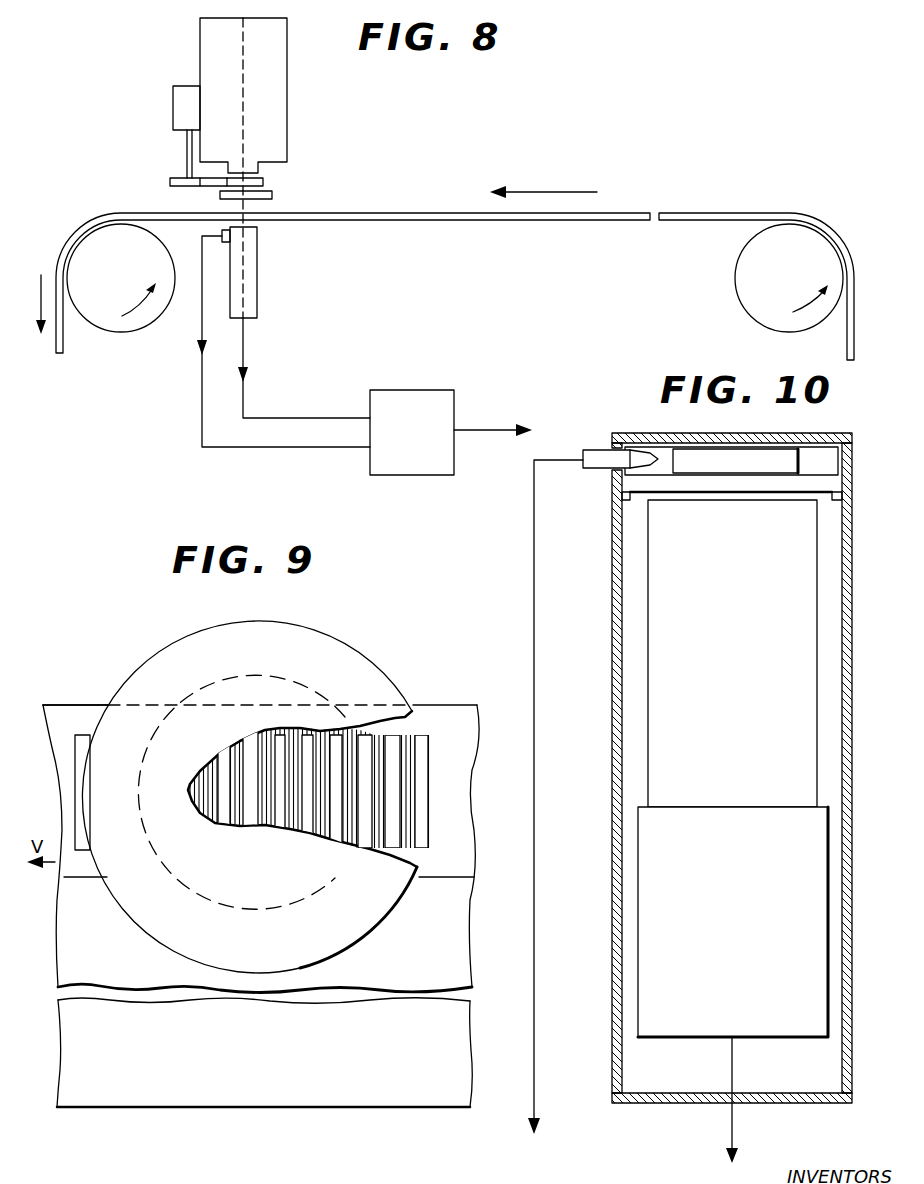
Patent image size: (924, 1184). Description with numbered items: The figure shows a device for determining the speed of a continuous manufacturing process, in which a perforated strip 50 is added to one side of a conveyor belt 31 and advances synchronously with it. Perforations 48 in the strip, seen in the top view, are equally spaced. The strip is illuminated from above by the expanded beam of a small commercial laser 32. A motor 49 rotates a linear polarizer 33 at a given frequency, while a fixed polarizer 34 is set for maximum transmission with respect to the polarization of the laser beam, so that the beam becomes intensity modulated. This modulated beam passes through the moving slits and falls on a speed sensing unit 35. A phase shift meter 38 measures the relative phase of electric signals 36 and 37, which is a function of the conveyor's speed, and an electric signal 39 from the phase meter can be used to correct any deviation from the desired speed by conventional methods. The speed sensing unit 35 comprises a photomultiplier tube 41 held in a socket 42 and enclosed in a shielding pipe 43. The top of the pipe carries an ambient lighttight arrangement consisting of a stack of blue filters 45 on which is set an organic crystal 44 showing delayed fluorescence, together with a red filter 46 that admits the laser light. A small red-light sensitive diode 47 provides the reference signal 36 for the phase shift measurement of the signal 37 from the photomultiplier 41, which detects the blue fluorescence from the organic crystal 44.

In FIG. 8, the conveyor belt 31 is at (560, 221).
In FIG. 9, the conveyor belt 31 is at (478, 912).
In FIG. 8, the laser 32 is at (270, 83).
In FIG. 9, the laser 32 is at (380, 658).
In FIG. 8, the linear polarizer 33 is at (264, 182).
In FIG. 8, the fixed polarizer 34 is at (273, 195).
In FIG. 8, the speed sensing unit 35 is at (257, 272).
In FIG. 9, the speed sensing unit 35 is at (297, 677).
In FIG. 8, the electric signal 36 is at (202, 404).
In FIG. 10, the electric signal 36 is at (553, 814).
In FIG. 8, the electric signal 37 is at (244, 355).
In FIG. 10, the electric signal 37 is at (732, 1110).
In FIG. 8, the phase shift meter 38 is at (425, 443).
In FIG. 8, the electric signal 39 is at (506, 431).
In FIG. 10, the photomultiplier tube 41 is at (742, 659).
In FIG. 10, the socket 42 is at (742, 926).
In FIG. 10, the shielding pipe 43 is at (862, 694).
In FIG. 10, the organic crystal 44 is at (764, 467).
In FIG. 10, the blue filters 45 is at (828, 485).
In FIG. 10, the red filter 46 is at (660, 434).
In FIG. 10, the red-light sensitive diode 47 is at (596, 449).
In FIG. 9, the perforations 48 is at (82, 736).
In FIG. 8, the motor 49 is at (173, 113).
In FIG. 9, the perforated strip 50 is at (64, 710).